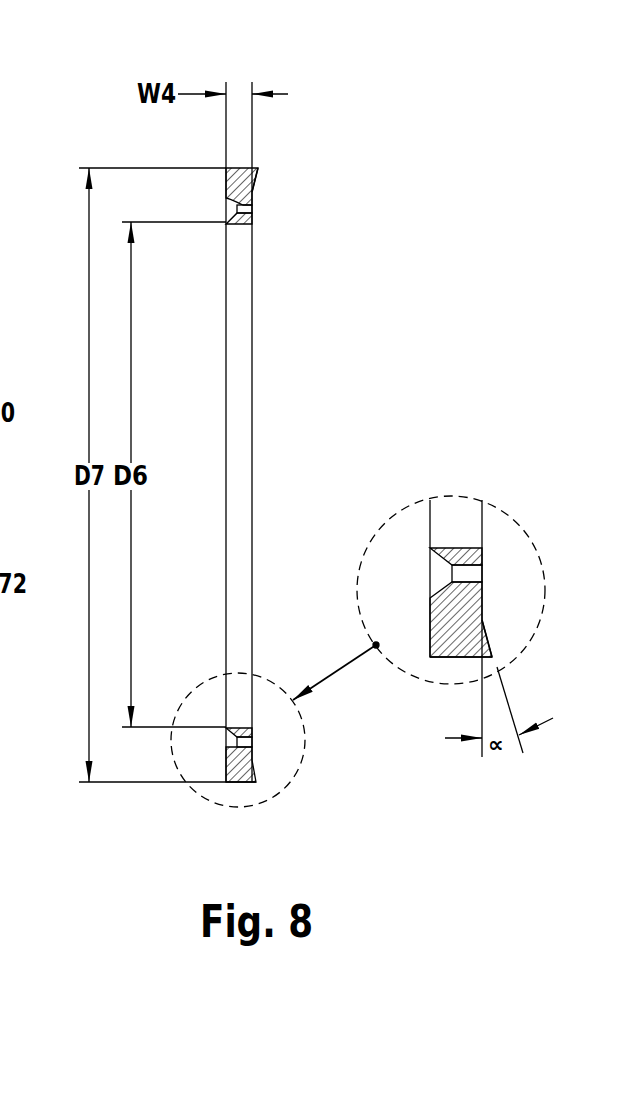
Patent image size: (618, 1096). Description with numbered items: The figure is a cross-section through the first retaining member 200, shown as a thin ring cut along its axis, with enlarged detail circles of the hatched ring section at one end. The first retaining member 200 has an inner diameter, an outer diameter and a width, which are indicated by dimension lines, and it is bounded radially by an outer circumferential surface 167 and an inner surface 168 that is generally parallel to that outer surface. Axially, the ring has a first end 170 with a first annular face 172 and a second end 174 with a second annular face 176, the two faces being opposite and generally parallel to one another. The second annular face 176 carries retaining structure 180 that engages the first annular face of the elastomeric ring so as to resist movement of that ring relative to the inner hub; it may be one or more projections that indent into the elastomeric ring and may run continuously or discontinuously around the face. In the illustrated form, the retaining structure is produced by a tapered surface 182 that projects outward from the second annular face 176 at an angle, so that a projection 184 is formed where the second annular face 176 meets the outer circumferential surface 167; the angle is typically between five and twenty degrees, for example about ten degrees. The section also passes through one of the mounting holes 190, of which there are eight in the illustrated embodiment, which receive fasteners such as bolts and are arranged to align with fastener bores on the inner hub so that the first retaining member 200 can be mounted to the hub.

The first retaining member 200 is at (307, 110).
The first end 170 is at (160, 158).
The second end 174 is at (277, 200).
The inner surface 168 is at (240, 224).
The mounting holes 190 is at (247, 209).
The second annular face 176 is at (253, 748).
The first annular face 172 is at (226, 765).
The tapered surface 182 is at (258, 773).
The projection 184 is at (256, 783).
The retaining structure 180 is at (272, 784).
The outer circumferential surface 167 is at (240, 785).